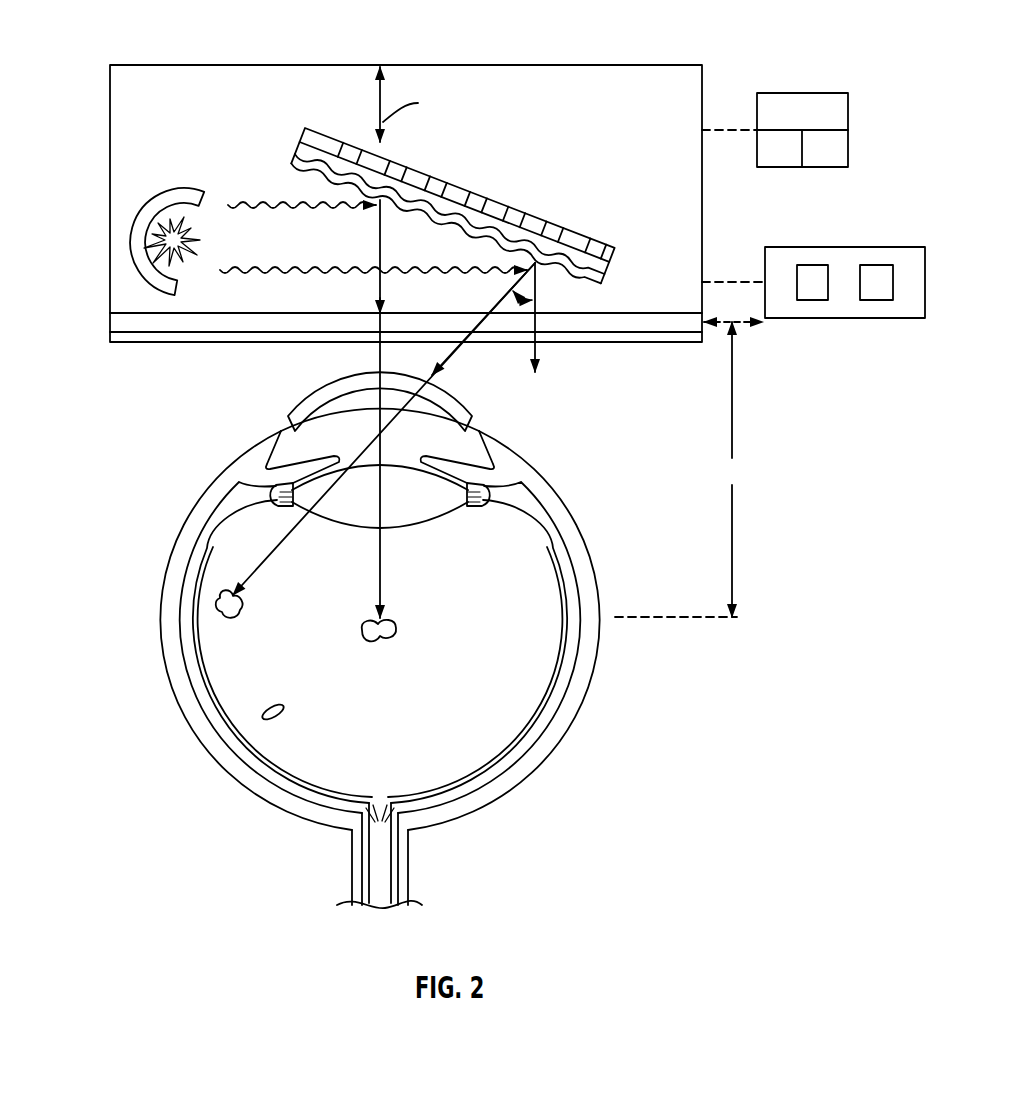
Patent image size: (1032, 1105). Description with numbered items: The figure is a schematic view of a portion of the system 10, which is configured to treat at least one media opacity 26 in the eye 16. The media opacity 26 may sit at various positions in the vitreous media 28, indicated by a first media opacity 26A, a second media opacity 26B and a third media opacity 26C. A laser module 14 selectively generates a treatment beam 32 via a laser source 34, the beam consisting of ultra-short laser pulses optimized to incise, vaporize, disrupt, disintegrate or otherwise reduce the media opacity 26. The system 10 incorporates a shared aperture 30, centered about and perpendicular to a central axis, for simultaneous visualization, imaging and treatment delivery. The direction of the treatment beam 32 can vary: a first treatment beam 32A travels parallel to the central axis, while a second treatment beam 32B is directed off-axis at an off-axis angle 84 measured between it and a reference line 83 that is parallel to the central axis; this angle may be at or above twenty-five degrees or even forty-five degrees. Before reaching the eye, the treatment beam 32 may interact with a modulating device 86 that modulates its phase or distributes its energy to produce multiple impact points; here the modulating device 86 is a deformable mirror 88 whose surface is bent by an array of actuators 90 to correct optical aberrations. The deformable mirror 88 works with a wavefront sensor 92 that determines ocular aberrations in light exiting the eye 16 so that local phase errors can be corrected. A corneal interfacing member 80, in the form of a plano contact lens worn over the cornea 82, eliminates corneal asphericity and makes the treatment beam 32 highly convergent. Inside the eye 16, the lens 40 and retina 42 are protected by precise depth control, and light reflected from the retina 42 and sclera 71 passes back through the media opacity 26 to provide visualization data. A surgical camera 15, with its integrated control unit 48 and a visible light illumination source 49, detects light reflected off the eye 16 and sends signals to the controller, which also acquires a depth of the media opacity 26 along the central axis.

The system 10 is at (712, 48).
The laser module 14 is at (113, 37).
The surgical camera 15 is at (845, 291).
The eye 16 is at (612, 660).
The media opacity 26 is at (288, 673).
The first media opacity 26A is at (405, 618).
The second media opacity 26B is at (220, 618).
The third media opacity 26C is at (278, 725).
The vitreous media 28 is at (298, 652).
The shared aperture 30 is at (95, 320).
The treatment beam 32 is at (242, 197).
The first treatment beam 32A is at (378, 284).
The second treatment beam 32B is at (437, 372).
The laser source 34 is at (142, 192).
The lens 40 is at (190, 530).
The retina 42 is at (218, 708).
The integrated control unit 48 is at (812, 300).
The visible light illumination source 49 is at (875, 300).
The sclera 71 is at (158, 607).
The corneal interfacing member 80 is at (487, 422).
The cornea 82 is at (317, 422).
The reference line 83 is at (537, 325).
The off-axis angle 84 is at (526, 305).
The modulating device 86 is at (517, 197).
The deformable mirror 88 is at (607, 283).
The array of actuators 90 is at (615, 253).
The wavefront sensor 92 is at (95, 335).